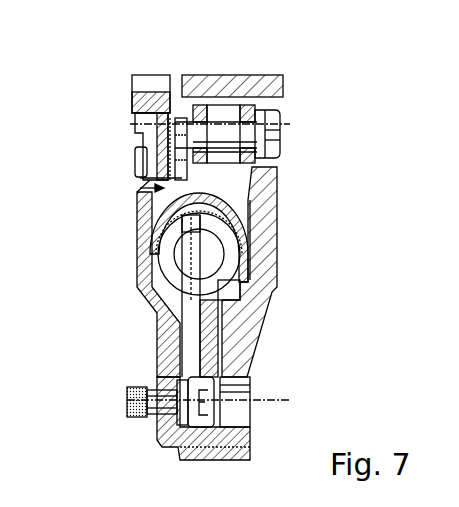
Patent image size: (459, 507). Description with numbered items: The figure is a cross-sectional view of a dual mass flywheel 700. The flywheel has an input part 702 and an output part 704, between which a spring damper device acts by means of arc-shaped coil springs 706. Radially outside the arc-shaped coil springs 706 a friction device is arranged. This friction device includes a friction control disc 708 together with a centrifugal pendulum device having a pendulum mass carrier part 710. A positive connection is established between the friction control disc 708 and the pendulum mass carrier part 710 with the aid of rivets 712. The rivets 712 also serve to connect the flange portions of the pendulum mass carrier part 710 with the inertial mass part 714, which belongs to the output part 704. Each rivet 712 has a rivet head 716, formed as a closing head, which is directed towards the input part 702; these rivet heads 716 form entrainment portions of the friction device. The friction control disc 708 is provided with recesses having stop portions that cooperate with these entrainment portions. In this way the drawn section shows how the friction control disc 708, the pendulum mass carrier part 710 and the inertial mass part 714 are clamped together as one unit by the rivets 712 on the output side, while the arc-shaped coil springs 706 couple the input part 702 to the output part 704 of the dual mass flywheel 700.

The dual mass flywheel 700 is at (267, 380).
The input part 702 is at (124, 249).
The output part 704 is at (281, 295).
The arc-shaped coil springs 706 is at (143, 295).
The friction control disc 708 is at (157, 212).
The pendulum mass carrier part 710 is at (246, 112).
The rivet 712 is at (258, 130).
The inertial mass part 714 is at (263, 210).
The rivet head 716 is at (145, 124).